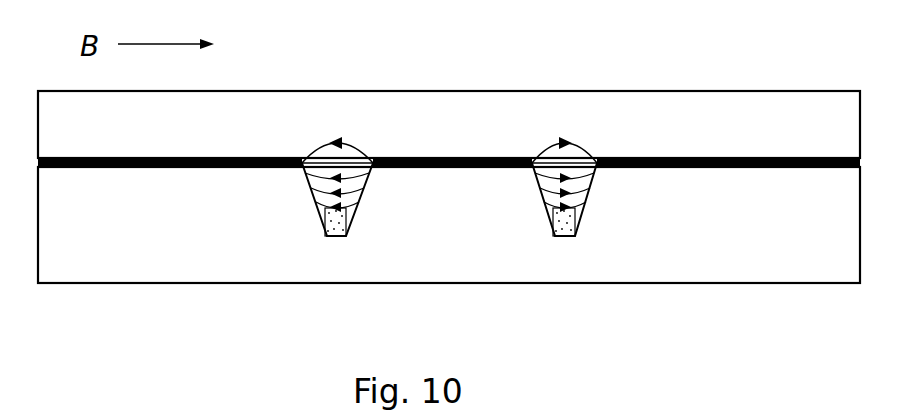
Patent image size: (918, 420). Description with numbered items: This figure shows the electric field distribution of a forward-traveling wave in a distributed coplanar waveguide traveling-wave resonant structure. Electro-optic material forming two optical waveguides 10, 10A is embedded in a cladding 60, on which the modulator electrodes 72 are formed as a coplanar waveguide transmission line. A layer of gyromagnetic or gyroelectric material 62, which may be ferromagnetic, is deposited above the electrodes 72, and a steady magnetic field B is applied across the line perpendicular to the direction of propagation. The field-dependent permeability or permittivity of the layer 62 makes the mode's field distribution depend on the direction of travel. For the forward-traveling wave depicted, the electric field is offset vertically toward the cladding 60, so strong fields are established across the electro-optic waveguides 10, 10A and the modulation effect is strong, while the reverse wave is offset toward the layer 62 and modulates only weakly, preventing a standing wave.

The gyromagnetic or gyroelectric material layer 62 is at (213, 102).
The modulator electrodes 72 is at (112, 170).
The cladding 60 is at (193, 267).
The electro-optic material optical waveguide 10 is at (332, 237).
The optical waveguide 10A is at (555, 236).